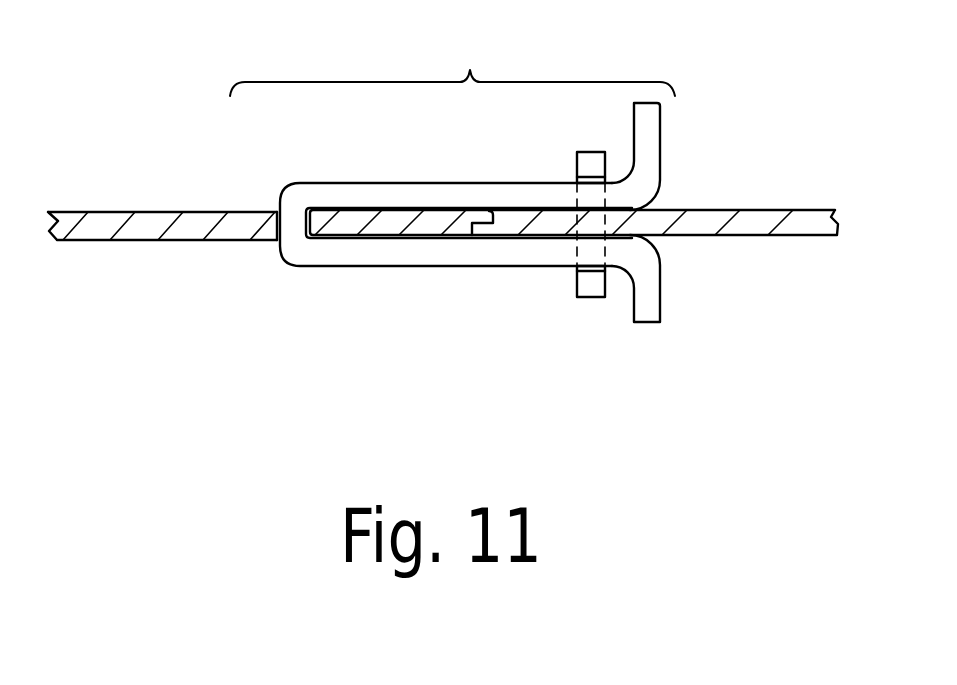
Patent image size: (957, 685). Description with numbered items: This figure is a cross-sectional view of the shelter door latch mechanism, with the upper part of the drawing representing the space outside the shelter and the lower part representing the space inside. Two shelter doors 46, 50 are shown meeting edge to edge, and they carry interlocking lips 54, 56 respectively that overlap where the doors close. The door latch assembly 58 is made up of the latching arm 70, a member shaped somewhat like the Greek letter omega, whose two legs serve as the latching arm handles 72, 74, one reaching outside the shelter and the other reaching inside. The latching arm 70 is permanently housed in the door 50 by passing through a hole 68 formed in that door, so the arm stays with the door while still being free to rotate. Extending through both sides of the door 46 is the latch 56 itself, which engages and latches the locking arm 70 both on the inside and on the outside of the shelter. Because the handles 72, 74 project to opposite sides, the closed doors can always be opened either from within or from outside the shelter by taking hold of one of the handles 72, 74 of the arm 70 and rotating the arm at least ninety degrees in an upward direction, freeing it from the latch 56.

The shelter door 46 is at (705, 222).
The shelter door 50 is at (190, 230).
The interlocking lip 54 is at (480, 230).
The latch 56 is at (482, 213).
The door latch assembly 58 is at (470, 70).
The hole 68 is at (273, 210).
The latching arm 70 is at (338, 190).
The latching arm handle 72 is at (648, 117).
The latching arm handle 74 is at (647, 310).